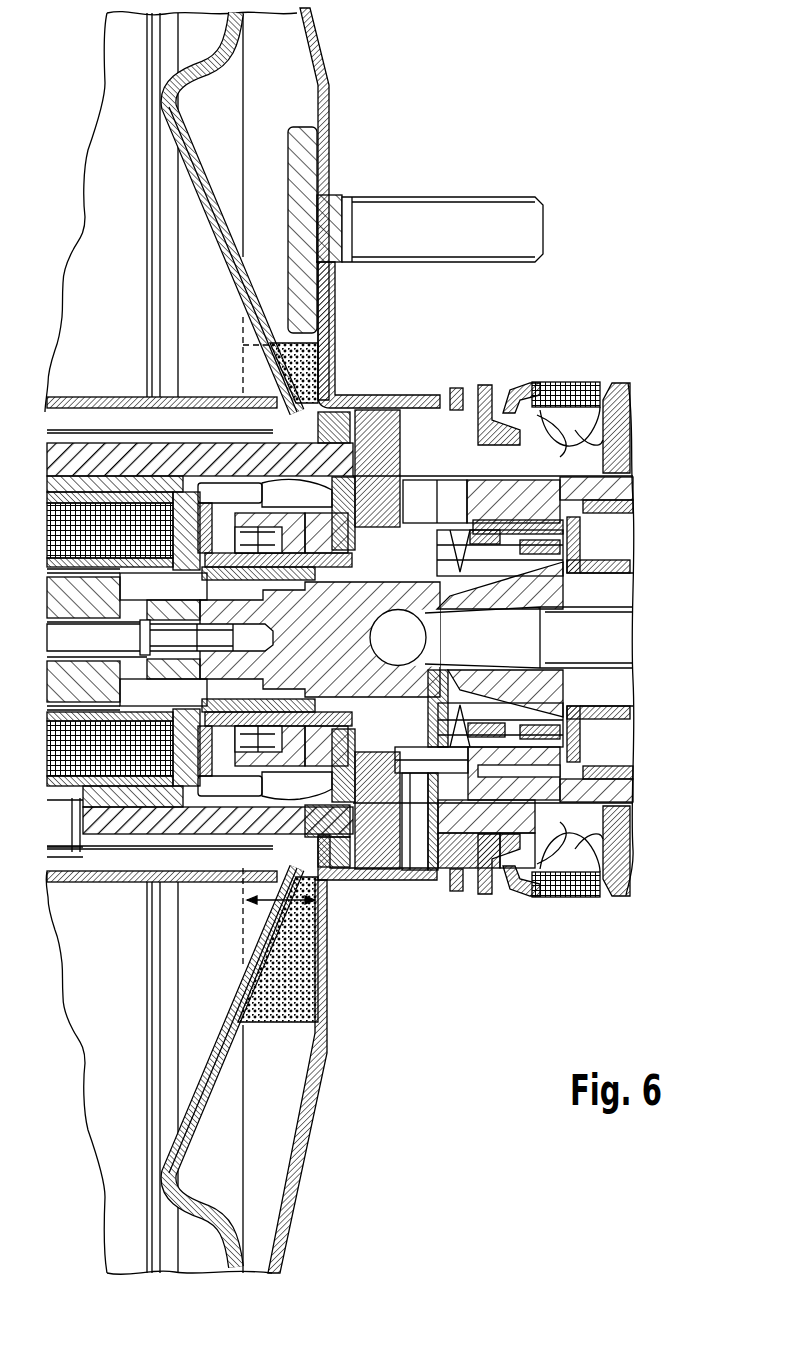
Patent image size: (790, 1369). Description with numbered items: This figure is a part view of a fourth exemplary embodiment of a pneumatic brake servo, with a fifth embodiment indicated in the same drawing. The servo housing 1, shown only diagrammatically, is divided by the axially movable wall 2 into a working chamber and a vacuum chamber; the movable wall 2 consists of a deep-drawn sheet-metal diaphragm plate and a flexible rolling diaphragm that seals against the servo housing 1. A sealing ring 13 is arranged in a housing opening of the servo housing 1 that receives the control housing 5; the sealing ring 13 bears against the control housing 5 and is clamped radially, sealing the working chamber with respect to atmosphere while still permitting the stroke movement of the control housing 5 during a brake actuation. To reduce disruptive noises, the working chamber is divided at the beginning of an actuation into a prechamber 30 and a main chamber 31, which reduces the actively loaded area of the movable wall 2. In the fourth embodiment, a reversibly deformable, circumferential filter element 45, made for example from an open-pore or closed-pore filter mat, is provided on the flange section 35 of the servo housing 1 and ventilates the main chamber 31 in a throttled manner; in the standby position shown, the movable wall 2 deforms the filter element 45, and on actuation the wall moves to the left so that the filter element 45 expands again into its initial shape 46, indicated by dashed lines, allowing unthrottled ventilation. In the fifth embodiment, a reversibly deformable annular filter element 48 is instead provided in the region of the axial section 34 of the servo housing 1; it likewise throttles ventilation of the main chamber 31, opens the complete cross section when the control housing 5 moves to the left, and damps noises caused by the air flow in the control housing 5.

The servo housing 1 is at (324, 48).
The axially movable wall 2 is at (222, 1106).
The control housing 5 is at (607, 492).
The sealing ring 13 is at (546, 432).
The prechamber 30 is at (343, 882).
The main chamber 31 is at (262, 1188).
The axial section 34 is at (373, 882).
The flange section 35 is at (323, 968).
The filter element 45 is at (287, 997).
The initial shape 46 is at (250, 923).
The annular filter element 48 is at (397, 882).